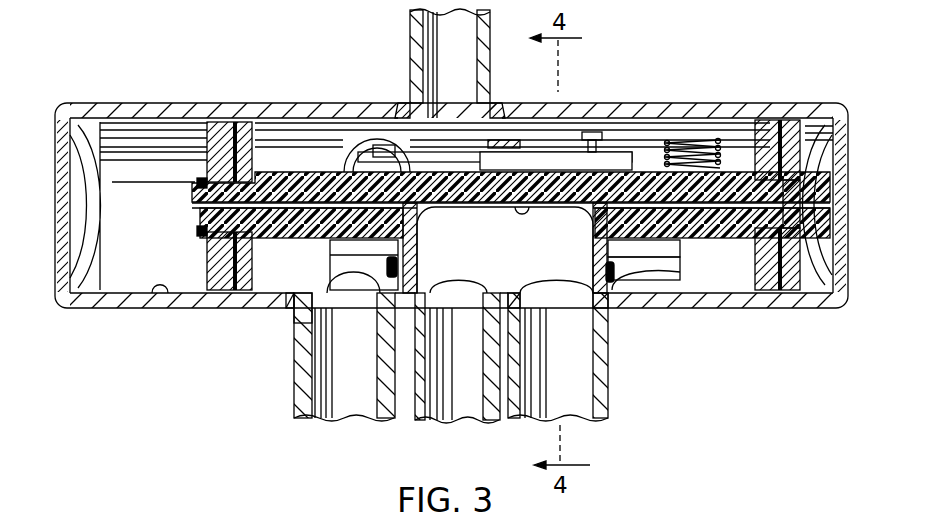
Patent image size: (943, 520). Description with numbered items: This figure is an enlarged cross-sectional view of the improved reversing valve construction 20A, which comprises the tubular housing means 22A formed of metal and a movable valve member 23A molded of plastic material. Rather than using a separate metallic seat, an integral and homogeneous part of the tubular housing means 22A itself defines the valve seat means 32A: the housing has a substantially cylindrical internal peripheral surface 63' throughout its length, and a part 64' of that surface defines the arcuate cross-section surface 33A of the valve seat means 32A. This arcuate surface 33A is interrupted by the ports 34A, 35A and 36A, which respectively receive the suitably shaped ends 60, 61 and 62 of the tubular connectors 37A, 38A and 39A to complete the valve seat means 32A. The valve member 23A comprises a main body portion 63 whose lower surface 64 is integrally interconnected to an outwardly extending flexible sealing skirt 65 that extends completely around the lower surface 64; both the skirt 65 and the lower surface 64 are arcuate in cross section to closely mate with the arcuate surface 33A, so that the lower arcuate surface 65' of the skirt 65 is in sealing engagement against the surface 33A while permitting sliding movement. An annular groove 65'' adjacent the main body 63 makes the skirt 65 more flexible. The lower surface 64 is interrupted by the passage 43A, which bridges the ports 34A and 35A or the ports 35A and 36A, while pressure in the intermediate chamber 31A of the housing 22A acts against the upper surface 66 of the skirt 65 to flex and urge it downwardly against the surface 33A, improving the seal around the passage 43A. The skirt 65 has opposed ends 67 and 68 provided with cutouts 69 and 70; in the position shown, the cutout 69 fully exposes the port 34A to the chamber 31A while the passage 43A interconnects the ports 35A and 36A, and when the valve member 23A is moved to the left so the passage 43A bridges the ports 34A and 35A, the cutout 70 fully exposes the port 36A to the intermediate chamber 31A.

The reversing valve construction 20A is at (740, 68).
The tubular housing means 22A is at (158, 103).
The movable valve member 23A is at (293, 179).
The intermediate chamber 31A is at (328, 132).
The main body portion 63 is at (511, 154).
The passage 43A is at (537, 210).
The end of tubular connector 60 is at (398, 273).
The lower surface 64 is at (454, 273).
The end of tubular connector 61 is at (493, 292).
The annular groove 65'' is at (581, 249).
The end of tubular connector 62 is at (600, 292).
The flexible sealing skirt 65 is at (671, 254).
The end of flexible skirt 68 is at (683, 268).
The cutout 70 is at (660, 297).
The lower arcuate surface 65' is at (646, 327).
The valve seat means 32A is at (612, 312).
The tubular connector 39A is at (608, 400).
The port 36A is at (520, 306).
The port 35A is at (412, 306).
The tubular connector 38A is at (410, 420).
The tubular connector 37A is at (294, 388).
The cutout 69 is at (345, 300).
The end of flexible skirt 67 is at (322, 298).
The upper surface 66 is at (330, 256).
The part of internal peripheral surface 64' is at (330, 275).
The internal peripheral surface 63' is at (130, 320).
The arcuate cross-section surface 33A is at (297, 298).
The port 34A is at (310, 335).